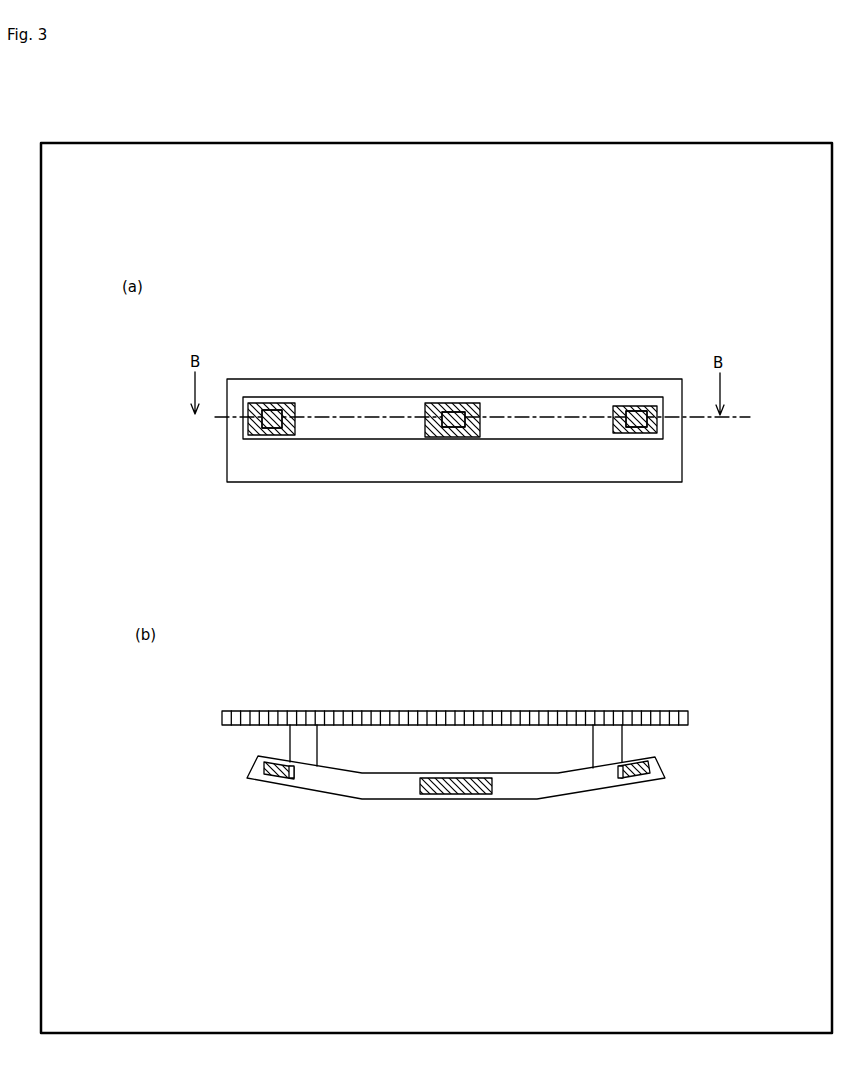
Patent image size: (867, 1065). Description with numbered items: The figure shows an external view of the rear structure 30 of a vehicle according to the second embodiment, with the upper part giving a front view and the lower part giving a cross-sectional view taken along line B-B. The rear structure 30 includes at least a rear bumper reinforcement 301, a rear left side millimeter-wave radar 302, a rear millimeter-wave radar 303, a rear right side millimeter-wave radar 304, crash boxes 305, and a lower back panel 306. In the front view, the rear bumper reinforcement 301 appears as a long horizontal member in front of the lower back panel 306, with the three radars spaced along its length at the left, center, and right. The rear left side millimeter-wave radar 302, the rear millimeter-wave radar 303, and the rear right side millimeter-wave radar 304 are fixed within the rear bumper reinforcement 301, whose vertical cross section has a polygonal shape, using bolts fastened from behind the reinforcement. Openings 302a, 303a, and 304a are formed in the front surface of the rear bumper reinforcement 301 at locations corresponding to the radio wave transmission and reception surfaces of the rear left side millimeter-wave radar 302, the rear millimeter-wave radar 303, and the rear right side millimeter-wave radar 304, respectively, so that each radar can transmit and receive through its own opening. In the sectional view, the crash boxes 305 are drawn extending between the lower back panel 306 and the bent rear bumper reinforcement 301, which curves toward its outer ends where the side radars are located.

The rear structure 30 is at (589, 307).
The rear bumper reinforcement 301 is at (370, 408).
The rear left side millimeter-wave radar 302 is at (267, 428).
The opening 302a is at (270, 410).
The rear millimeter-wave radar 303 is at (452, 433).
The opening 303a is at (448, 410).
The rear right side millimeter-wave radar 304 is at (642, 435).
The opening 304a is at (630, 406).
The crash boxes 305 is at (318, 745).
The lower back panel 306 is at (502, 387).